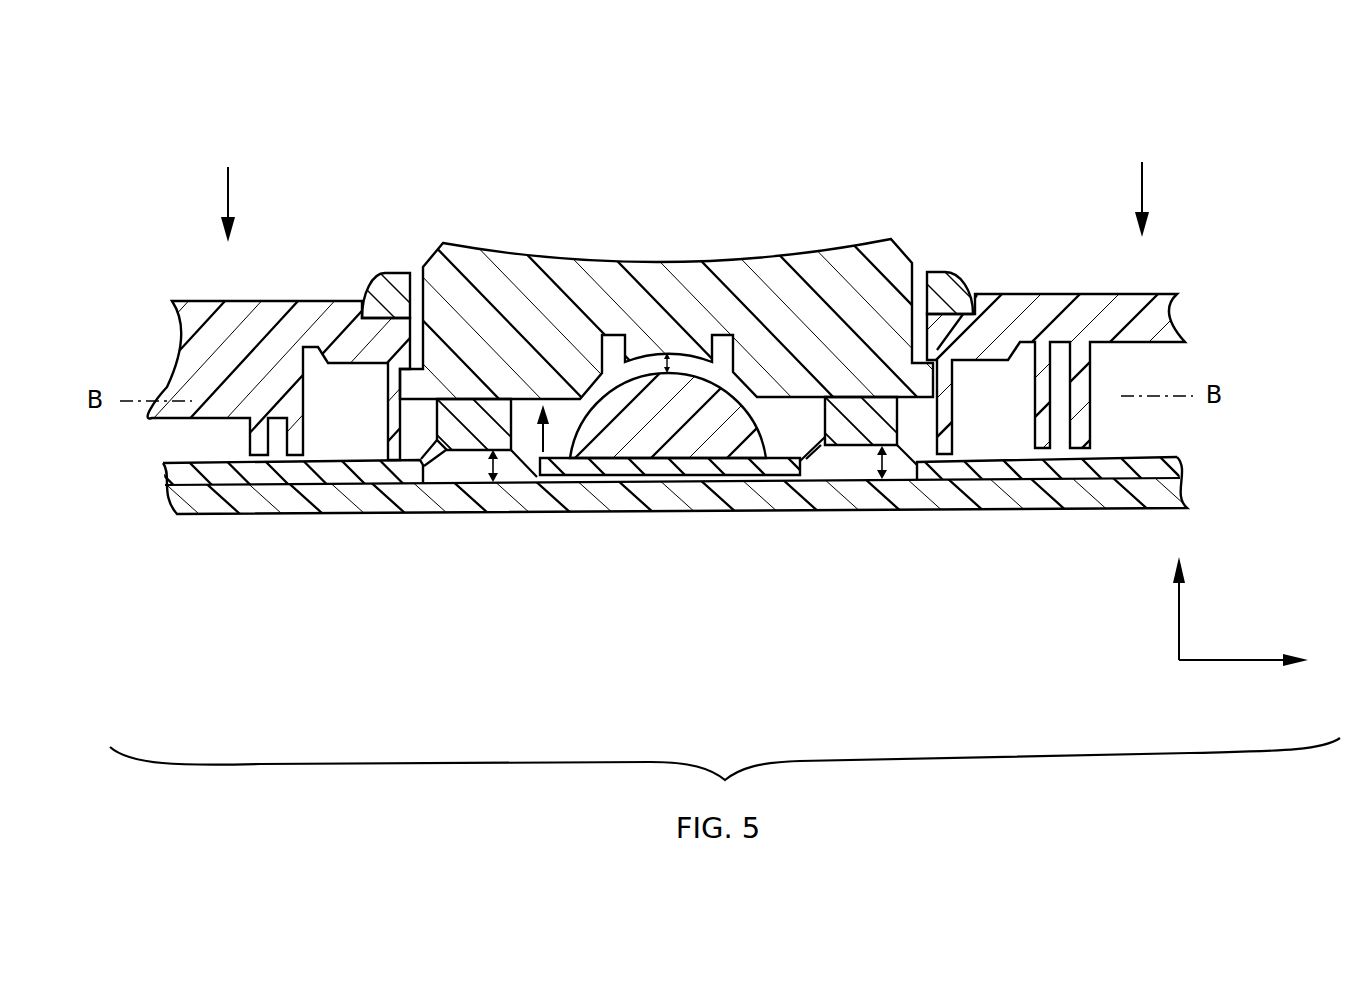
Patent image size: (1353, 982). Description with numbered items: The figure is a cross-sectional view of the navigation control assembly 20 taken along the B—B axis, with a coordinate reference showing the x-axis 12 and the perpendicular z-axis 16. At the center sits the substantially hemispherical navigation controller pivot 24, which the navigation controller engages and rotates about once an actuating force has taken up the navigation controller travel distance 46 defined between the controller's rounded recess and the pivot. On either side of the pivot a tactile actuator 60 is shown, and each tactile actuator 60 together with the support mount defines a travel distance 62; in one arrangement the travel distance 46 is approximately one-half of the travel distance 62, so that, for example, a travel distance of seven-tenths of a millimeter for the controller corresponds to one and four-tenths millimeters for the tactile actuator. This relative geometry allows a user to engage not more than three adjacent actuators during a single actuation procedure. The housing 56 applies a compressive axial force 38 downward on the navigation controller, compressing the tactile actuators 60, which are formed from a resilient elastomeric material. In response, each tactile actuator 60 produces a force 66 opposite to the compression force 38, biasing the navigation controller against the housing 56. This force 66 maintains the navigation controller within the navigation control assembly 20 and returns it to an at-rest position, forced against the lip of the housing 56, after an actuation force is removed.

The x-axis 12 is at (1268, 662).
The z-axis 16 is at (1177, 654).
The navigation control assembly 20 is at (843, 199).
The navigation controller pivot 24 is at (673, 443).
The compressive axial force 38 is at (227, 190).
The navigation controller travel distance 46 is at (667, 357).
The housing 56 is at (317, 300).
The tactile actuator 60 is at (463, 433).
The travel distance 62 is at (487, 467).
The force 66 is at (546, 436).